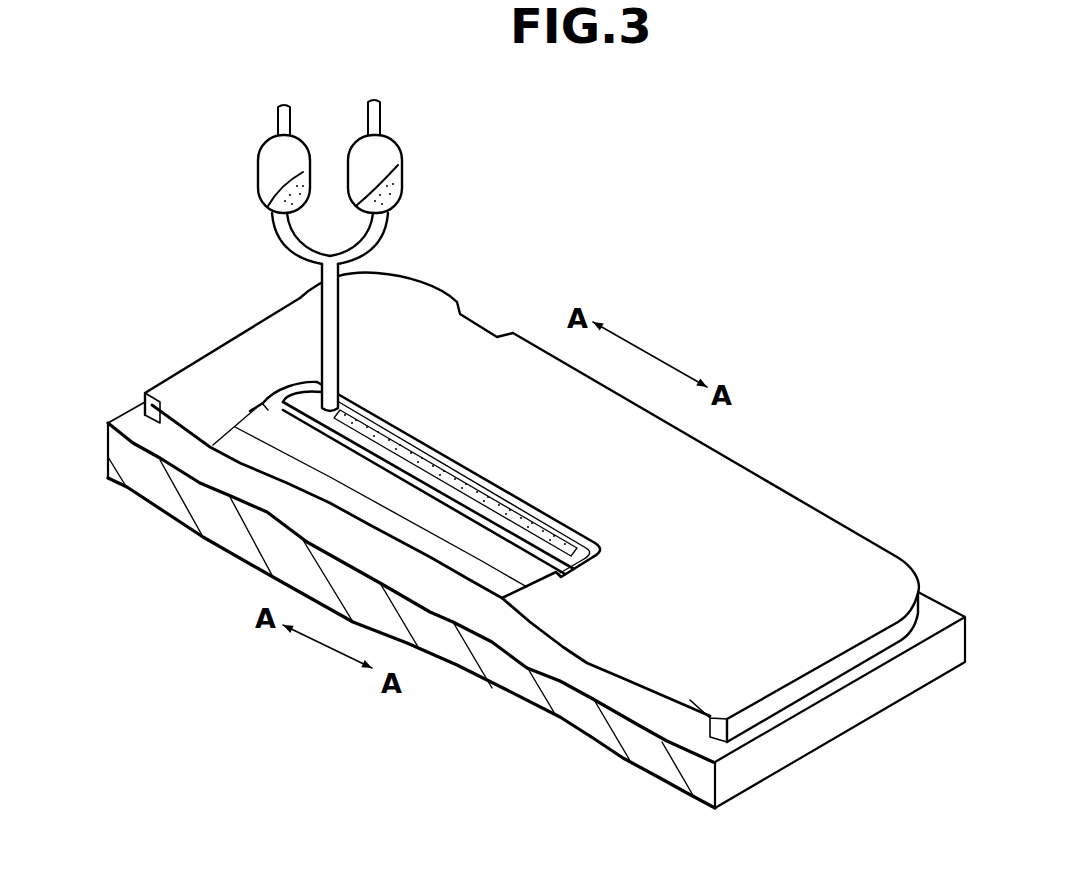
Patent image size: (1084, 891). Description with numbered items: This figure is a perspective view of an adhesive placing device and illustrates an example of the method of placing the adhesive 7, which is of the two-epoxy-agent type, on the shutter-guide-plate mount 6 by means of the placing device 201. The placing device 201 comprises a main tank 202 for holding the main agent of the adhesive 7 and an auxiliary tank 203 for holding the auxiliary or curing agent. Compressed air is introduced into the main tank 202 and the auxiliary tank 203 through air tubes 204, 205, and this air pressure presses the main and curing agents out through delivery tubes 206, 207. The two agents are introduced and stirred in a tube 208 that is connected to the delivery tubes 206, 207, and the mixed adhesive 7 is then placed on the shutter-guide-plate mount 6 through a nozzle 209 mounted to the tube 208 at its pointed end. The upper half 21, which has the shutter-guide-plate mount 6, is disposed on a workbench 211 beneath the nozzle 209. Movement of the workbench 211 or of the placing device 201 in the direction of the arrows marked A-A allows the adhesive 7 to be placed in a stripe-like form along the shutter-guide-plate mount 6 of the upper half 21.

The placing device 201 is at (299, 241).
The main tank 202 is at (257, 168).
The auxiliary tank 203 is at (393, 157).
The air tube 204 is at (277, 110).
The air tube 205 is at (383, 122).
The delivery tube 206 is at (283, 245).
The delivery tube 207 is at (380, 237).
The tube 208 is at (340, 319).
The nozzle 209 is at (340, 383).
The adhesive 7 is at (388, 415).
The shutter-guide-plate mount 6 is at (473, 467).
The upper half 21 is at (532, 491).
The workbench 211 is at (937, 607).